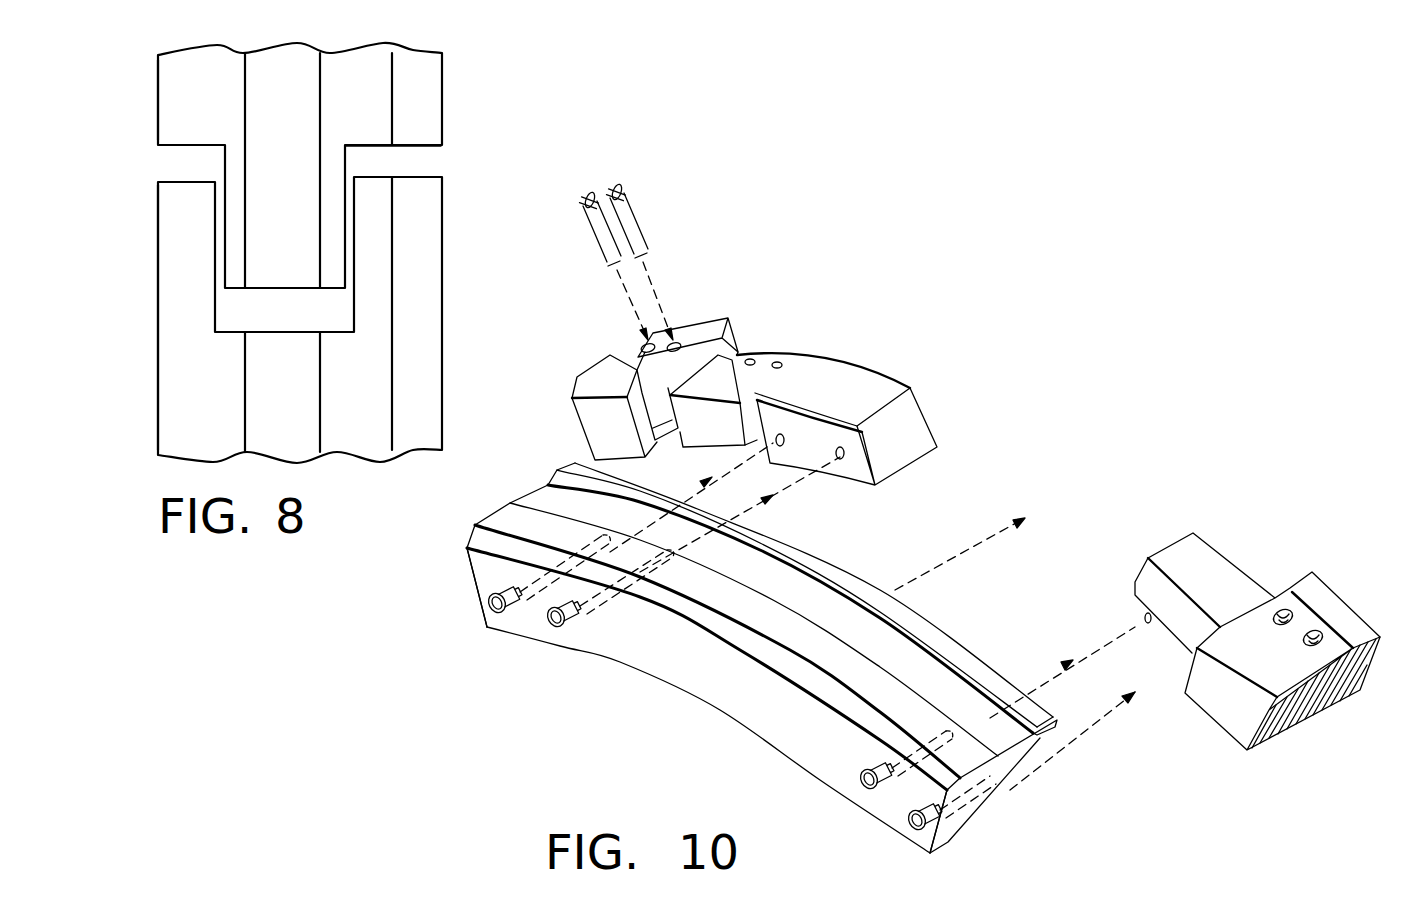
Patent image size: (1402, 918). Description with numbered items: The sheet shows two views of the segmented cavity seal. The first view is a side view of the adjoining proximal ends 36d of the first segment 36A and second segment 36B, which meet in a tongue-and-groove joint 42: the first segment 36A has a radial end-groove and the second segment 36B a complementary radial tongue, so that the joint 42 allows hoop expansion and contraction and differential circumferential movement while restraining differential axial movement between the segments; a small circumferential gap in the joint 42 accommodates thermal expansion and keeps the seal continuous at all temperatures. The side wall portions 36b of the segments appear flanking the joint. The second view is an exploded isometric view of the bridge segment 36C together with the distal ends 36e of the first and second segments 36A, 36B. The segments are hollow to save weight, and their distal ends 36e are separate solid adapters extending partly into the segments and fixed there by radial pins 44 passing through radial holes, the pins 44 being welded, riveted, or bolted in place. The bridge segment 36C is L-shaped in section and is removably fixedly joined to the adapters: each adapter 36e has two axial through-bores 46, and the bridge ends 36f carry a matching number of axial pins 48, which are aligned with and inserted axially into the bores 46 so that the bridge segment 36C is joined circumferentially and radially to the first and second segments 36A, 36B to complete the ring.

In FIG. 8, the first segment 36A is at (150, 392).
In FIG. 10, the first segment 36A is at (1210, 728).
In FIG. 8, the second segment 36B is at (150, 76).
In FIG. 10, the second segment 36B is at (606, 350).
In FIG. 10, the bridge segment 36C is at (712, 716).
In FIG. 8, the outer wall 36b is at (420, 100).
In FIG. 8, the proximal ends 36d is at (158, 103).
In FIG. 10, the distal ends 36e is at (885, 375).
In FIG. 10, the bridge ends 36f is at (520, 622).
In FIG. 8, the tongue-and-groove joint 42 is at (462, 152).
In FIG. 10, the radial pins 44 is at (617, 185).
In FIG. 10, the axial through-bores 46 is at (840, 460).
In FIG. 10, the axial pins 48 is at (488, 607).